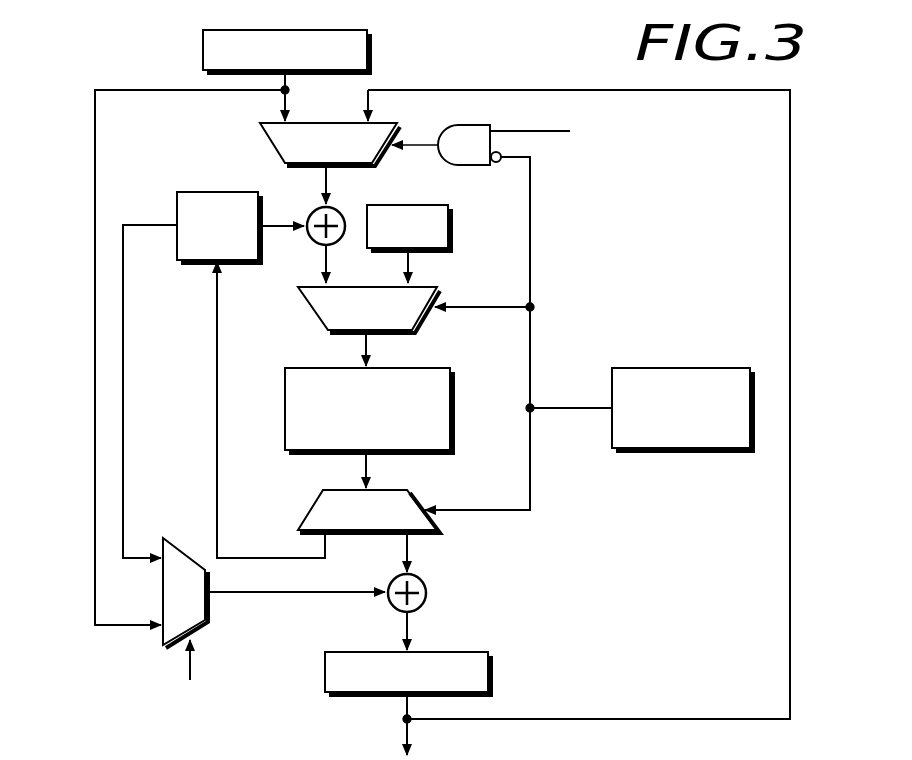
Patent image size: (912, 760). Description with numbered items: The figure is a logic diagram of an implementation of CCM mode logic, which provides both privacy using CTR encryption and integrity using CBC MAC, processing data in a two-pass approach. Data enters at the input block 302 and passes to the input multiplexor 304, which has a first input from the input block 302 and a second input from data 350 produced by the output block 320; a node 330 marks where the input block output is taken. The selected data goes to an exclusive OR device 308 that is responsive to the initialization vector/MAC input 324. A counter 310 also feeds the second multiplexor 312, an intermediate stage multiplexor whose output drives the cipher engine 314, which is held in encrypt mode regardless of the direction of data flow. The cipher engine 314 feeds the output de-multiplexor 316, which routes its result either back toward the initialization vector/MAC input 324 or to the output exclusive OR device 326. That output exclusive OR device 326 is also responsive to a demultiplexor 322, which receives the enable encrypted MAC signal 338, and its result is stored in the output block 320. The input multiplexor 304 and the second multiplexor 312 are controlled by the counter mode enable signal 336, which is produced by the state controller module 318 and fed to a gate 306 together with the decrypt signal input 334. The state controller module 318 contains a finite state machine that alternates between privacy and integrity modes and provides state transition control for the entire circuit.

The input block 302 is at (203, 50).
The input multiplexor 304 is at (264, 136).
The gate 306 is at (436, 127).
The exclusive OR device 308 is at (312, 210).
The counter 310 is at (450, 210).
The second multiplexor 312 is at (304, 299).
The cipher engine 314 is at (410, 368).
The output de-multiplexor 316 is at (331, 484).
The state controller module 318 is at (694, 368).
The output block 320 is at (454, 650).
The demultiplexor 322 is at (188, 540).
The initialization vector/MAC input 324 is at (177, 198).
The output exclusive OR device 326 is at (427, 585).
The input data node 330 is at (290, 92).
The decrypt signal input 334 is at (555, 133).
The counter mode enable signal 336 is at (532, 238).
The enable encrypted MAC 338 is at (191, 666).
The data 350 is at (509, 90).